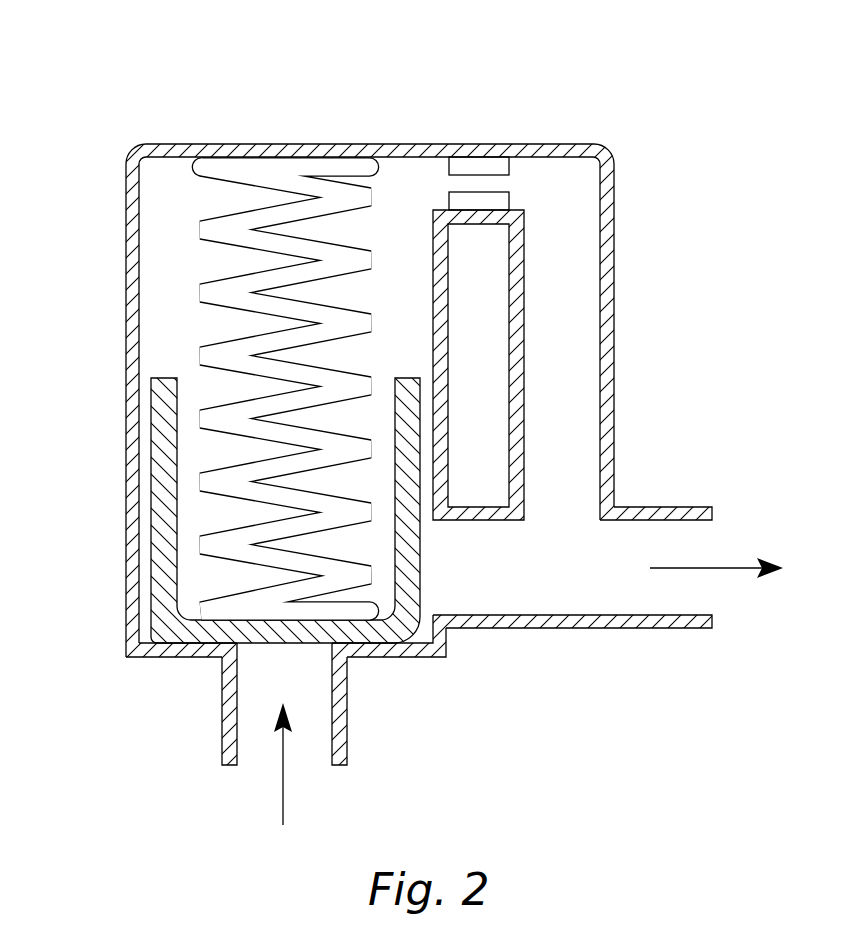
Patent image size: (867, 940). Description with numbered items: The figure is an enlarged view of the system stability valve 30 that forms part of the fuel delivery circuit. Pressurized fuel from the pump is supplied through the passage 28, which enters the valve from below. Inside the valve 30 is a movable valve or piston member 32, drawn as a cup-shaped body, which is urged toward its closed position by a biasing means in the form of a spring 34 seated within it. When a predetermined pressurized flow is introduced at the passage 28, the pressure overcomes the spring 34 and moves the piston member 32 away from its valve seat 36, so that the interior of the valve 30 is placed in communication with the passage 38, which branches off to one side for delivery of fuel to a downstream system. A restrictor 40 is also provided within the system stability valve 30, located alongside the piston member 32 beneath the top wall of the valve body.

The passage 28 is at (347, 720).
The system stability valve 30 is at (188, 116).
The piston member 32 is at (158, 472).
The spring 34 is at (231, 284).
The valve seat 36 is at (207, 645).
The passage 38 is at (672, 507).
The restrictor 40 is at (452, 182).